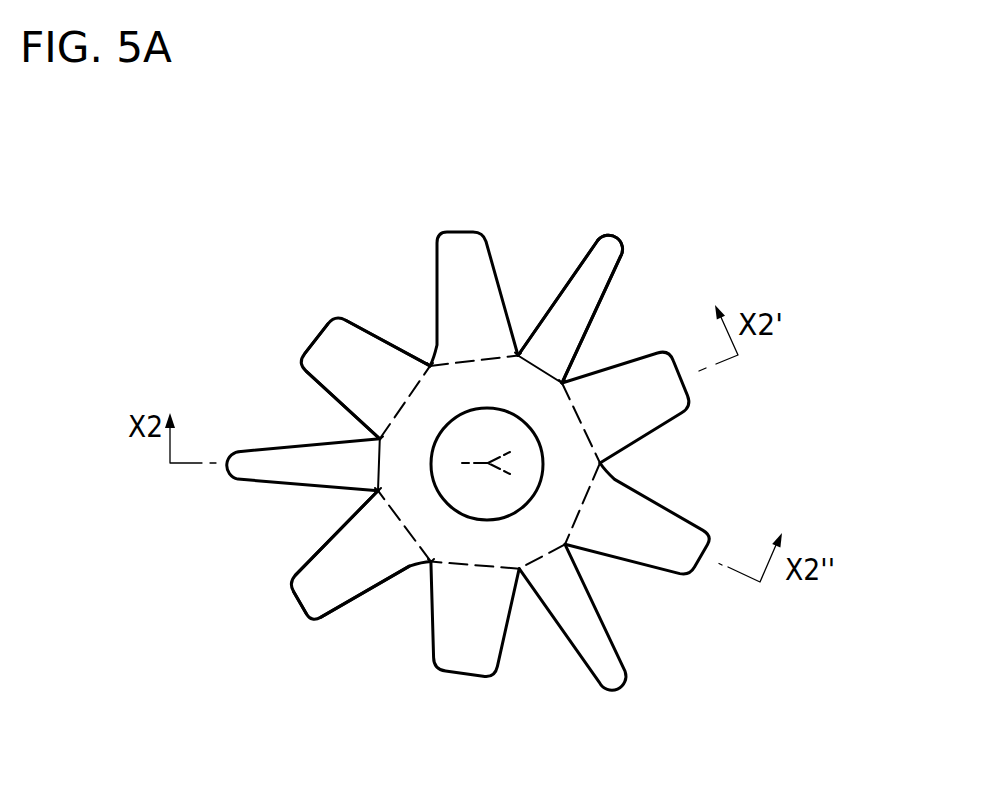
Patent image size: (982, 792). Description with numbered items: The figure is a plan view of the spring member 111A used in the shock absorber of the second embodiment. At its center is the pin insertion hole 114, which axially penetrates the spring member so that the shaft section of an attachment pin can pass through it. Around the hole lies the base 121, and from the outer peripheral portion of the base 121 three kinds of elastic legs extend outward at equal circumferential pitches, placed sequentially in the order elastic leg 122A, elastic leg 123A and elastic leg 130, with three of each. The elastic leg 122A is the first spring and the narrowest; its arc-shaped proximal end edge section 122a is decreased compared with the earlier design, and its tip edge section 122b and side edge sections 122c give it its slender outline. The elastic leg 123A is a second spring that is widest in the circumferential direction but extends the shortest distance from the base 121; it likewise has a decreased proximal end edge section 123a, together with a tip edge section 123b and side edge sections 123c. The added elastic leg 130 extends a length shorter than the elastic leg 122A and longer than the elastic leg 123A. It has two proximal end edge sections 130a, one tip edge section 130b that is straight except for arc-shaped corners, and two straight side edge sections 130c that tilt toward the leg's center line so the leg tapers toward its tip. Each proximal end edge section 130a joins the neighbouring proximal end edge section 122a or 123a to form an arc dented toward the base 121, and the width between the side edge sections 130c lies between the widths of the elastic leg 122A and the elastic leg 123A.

The spring member 111A is at (752, 229).
The base 121 is at (576, 462).
The pin insertion hole 114 is at (474, 512).
The elastic leg 130 is at (463, 243).
The proximal end edge section 130a is at (430, 561).
The tip edge section 130b is at (300, 605).
The side edge section 130c is at (325, 545).
The elastic leg 122A is at (608, 262).
The proximal end edge section 122a is at (565, 380).
The tip end face of first tooth 122b is at (612, 238).
The side face of first tooth 122c is at (573, 275).
The elastic leg 123A is at (347, 347).
The proximal end edge section 123a is at (432, 364).
The tip end face of second tooth 123b is at (315, 337).
The side face of second tooth 123c is at (373, 336).